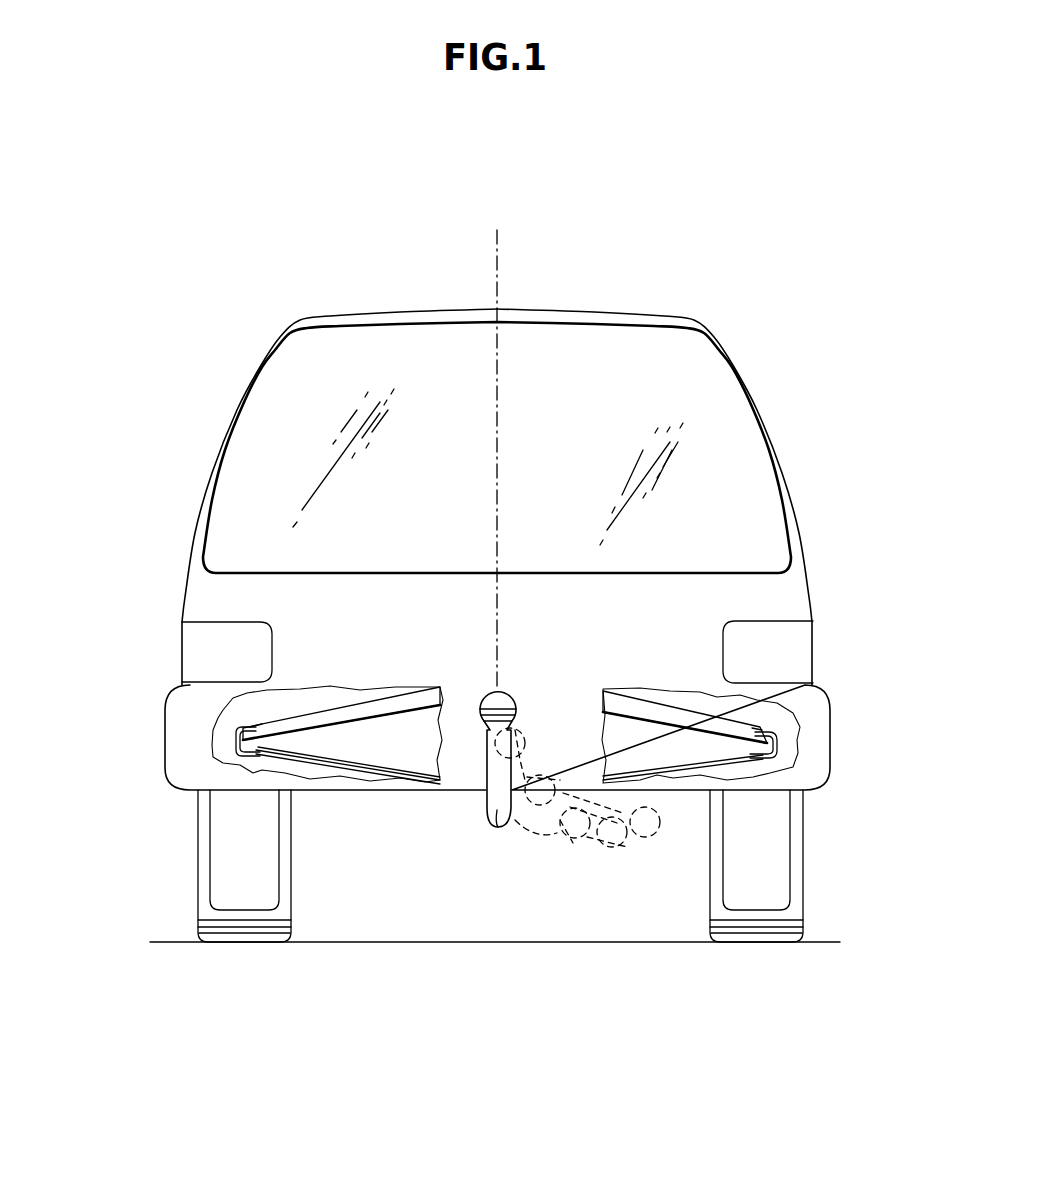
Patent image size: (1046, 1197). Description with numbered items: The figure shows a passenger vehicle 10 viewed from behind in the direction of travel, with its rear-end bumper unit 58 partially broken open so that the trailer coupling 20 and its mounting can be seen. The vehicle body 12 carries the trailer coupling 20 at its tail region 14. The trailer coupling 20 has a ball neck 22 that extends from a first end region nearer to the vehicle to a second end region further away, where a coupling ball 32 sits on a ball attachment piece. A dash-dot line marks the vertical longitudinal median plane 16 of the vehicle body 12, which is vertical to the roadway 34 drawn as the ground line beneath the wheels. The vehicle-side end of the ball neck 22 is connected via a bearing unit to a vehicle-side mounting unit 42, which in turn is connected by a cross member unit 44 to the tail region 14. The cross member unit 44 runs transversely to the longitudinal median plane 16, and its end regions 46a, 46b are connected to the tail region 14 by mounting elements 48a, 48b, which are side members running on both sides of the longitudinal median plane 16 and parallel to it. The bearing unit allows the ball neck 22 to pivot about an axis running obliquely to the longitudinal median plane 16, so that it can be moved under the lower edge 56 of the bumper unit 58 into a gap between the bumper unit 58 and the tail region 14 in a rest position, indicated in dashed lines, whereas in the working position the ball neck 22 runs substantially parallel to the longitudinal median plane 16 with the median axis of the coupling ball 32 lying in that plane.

The passenger vehicle 10 is at (806, 398).
The vehicle body 12 is at (818, 511).
The tail region 14 is at (695, 668).
The longitudinal median plane 16 is at (500, 262).
The trailer coupling 20 is at (469, 820).
The ball neck 22 is at (497, 815).
The coupling ball 32 is at (492, 700).
The roadway 34 is at (643, 940).
The vehicle-side mounting unit 42 is at (246, 834).
The cross member unit 44 is at (774, 691).
The end region of cross member unit 46a is at (237, 742).
The end region of cross member unit 46b is at (780, 743).
The mounting element 48a is at (243, 740).
The mounting element 48b is at (777, 735).
The lower edge 56 is at (427, 783).
The bumper unit 58 is at (367, 772).